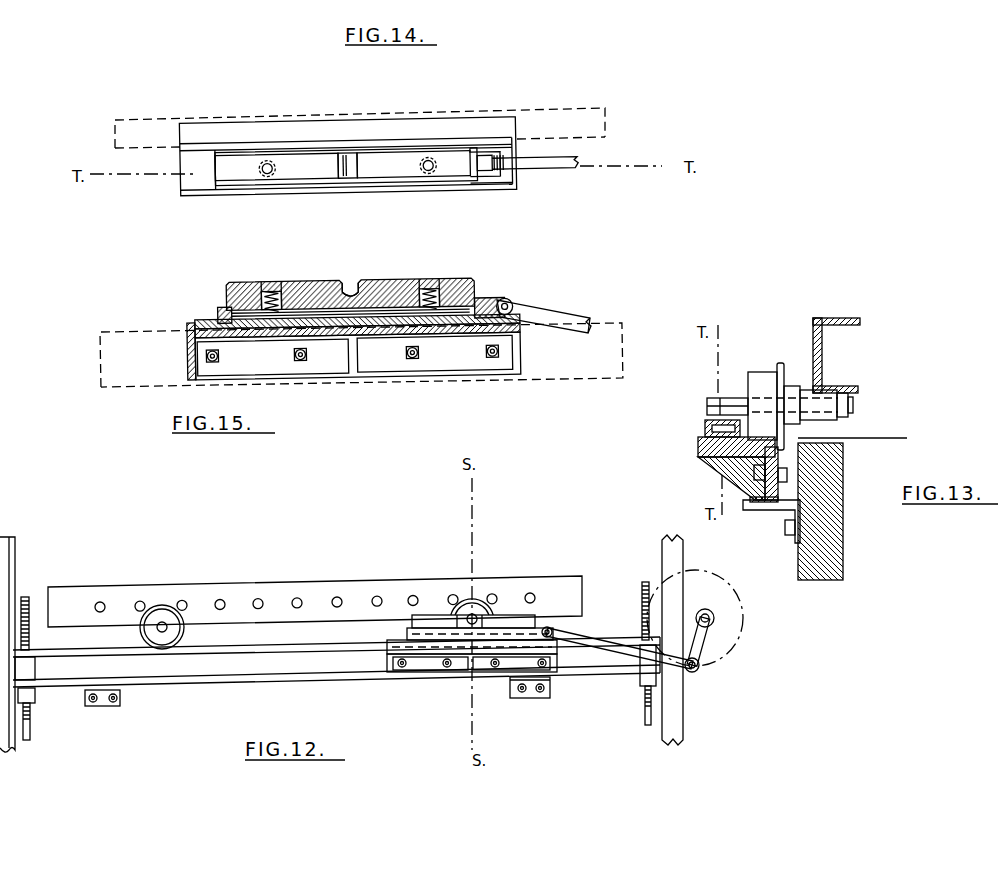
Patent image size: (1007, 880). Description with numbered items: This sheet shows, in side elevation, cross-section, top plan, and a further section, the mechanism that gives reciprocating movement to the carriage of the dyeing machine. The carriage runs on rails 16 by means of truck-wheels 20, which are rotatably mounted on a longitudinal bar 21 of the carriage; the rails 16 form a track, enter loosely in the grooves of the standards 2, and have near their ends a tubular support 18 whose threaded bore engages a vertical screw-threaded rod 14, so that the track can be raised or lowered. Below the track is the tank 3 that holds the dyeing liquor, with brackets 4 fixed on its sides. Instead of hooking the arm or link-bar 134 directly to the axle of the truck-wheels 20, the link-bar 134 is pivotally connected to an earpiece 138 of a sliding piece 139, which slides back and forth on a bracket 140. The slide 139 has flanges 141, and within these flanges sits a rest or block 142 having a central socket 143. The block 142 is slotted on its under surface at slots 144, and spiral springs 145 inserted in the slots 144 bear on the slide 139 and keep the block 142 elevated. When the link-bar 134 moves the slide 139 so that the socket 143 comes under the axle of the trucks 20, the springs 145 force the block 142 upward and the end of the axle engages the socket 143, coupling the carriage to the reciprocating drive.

In FIG. 12, the standard 2 is at (695, 640).
In FIG. 13, the tank 3 is at (852, 509).
In FIG. 12, the tank 3 is at (254, 708).
In FIG. 13, the bracket 4 is at (771, 520).
In FIG. 12, the bracket 4 is at (510, 690).
In FIG. 12, the screw-threaded rod 14 is at (53, 738).
In FIG. 15, the rail 16 is at (361, 355).
In FIG. 12, the rail 16 is at (336, 662).
In FIG. 12, the tubular portion or support 18 is at (335, 645).
In FIG. 13, the truck-wheel 20 is at (800, 401).
In FIG. 12, the truck-wheel 20 is at (503, 566).
In FIG. 12, the longitudinal bar 21 is at (315, 597).
In FIG. 14, the arm or link-bar 134 is at (535, 176).
In FIG. 15, the arm or link-bar 134 is at (544, 308).
In FIG. 12, the arm or link-bar 134 is at (588, 631).
In FIG. 14, the earpiece 138 is at (500, 186).
In FIG. 15, the earpiece 138 is at (493, 297).
In FIG. 12, the earpiece 138 is at (549, 627).
In FIG. 14, the sliding piece 139 is at (407, 186).
In FIG. 15, the sliding piece 139 is at (198, 319).
In FIG. 13, the sliding piece 139 is at (700, 441).
In FIG. 12, the sliding piece 139 is at (437, 656).
In FIG. 14, the bracket 140 is at (333, 163).
In FIG. 15, the bracket 140 is at (358, 356).
In FIG. 13, the bracket 140 is at (700, 459).
In FIG. 12, the bracket 140 is at (415, 670).
In FIG. 14, the flange 141 is at (220, 181).
In FIG. 15, the flange 141 is at (222, 305).
In FIG. 13, the flange 141 is at (706, 426).
In FIG. 14, the rest or block 142 is at (385, 164).
In FIG. 15, the rest or block 142 is at (350, 282).
In FIG. 13, the rest or block 142 is at (720, 404).
In FIG. 12, the rest or block 142 is at (437, 615).
In FIG. 14, the central socket 143 is at (353, 176).
In FIG. 15, the central socket 143 is at (353, 290).
In FIG. 14, the slot 144 is at (337, 166).
In FIG. 15, the slot 144 is at (268, 290).
In FIG. 15, the spiral spring 145 is at (272, 290).